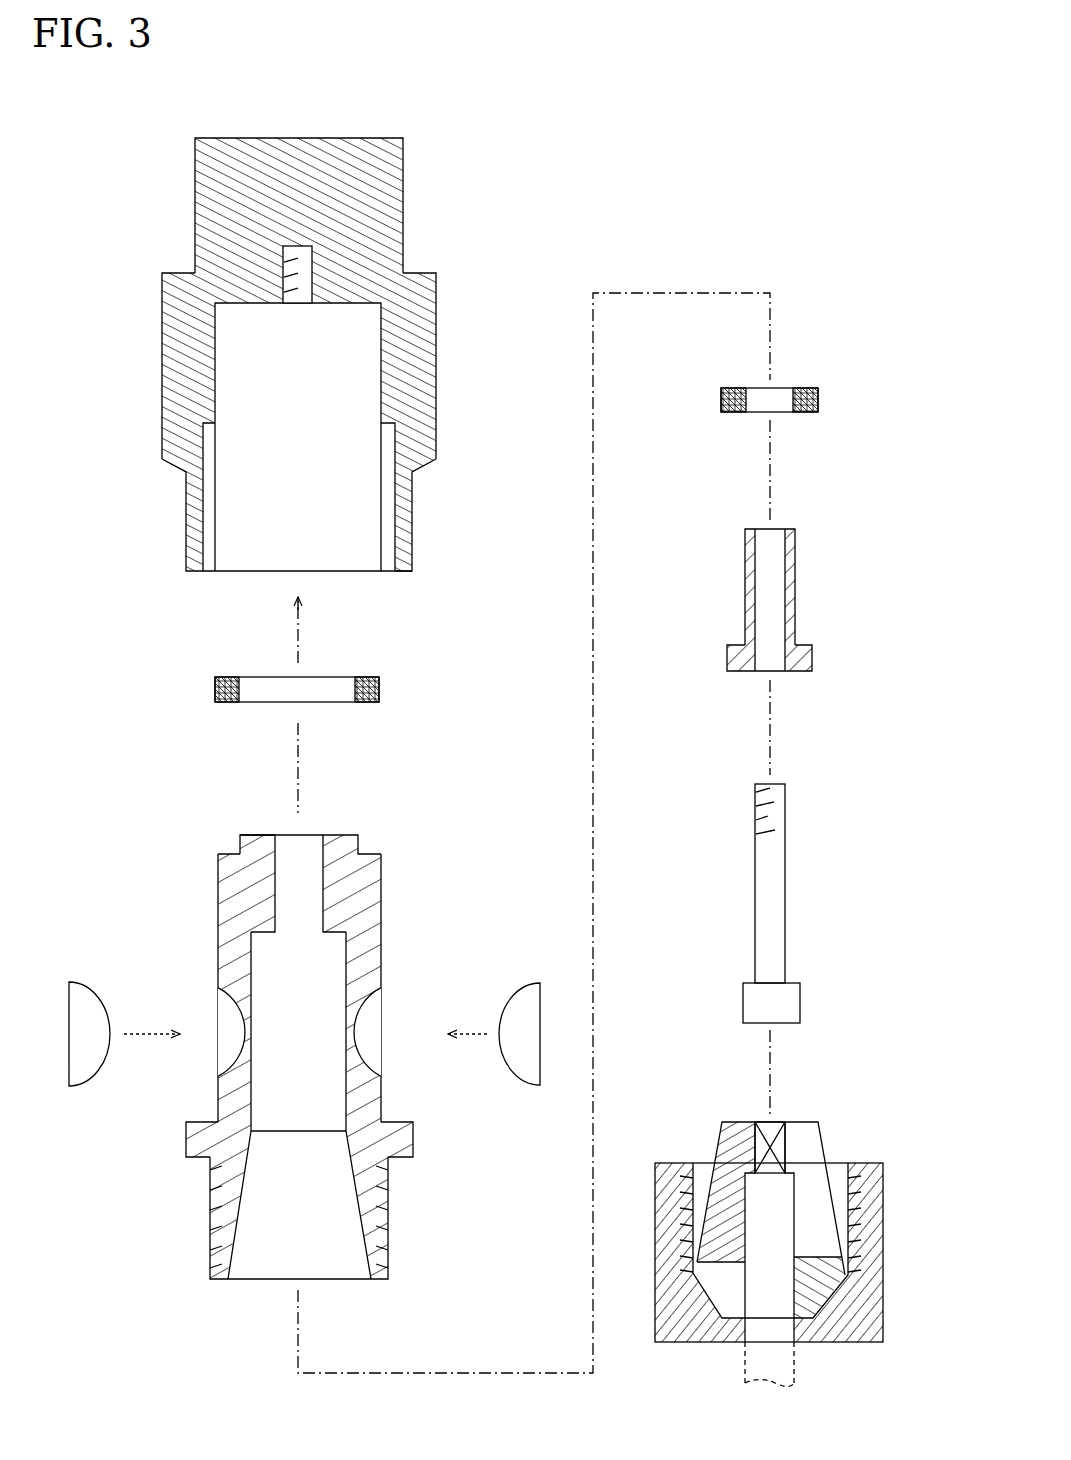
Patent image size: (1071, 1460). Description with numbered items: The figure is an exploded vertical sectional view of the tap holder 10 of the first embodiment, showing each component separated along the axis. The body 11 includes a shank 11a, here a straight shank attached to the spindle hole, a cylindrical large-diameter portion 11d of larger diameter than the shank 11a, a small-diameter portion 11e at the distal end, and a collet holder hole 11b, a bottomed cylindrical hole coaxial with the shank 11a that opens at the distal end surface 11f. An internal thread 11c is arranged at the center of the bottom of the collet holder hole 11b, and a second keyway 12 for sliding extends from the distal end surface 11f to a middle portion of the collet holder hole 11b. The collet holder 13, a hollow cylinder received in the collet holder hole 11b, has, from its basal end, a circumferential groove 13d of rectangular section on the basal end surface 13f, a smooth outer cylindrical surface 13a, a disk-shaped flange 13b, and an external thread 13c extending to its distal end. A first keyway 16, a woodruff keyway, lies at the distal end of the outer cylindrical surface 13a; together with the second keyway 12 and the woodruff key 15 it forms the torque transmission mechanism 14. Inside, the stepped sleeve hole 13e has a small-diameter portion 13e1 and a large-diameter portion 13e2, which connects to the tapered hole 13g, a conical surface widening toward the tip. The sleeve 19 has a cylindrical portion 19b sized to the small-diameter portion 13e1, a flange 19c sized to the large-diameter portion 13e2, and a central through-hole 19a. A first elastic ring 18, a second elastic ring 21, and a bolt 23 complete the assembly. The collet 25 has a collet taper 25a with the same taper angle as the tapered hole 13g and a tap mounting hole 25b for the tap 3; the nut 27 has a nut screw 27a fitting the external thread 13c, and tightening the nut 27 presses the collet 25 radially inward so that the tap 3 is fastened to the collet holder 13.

The tap 3 is at (795, 1370).
The tap holder 10 is at (887, 93).
The body 11 is at (447, 114).
The shank 11a is at (403, 161).
The collet holder hole 11b is at (228, 348).
The internal thread 11c is at (300, 262).
The large-diameter portion 11d is at (437, 352).
The small-diameter portion 11e is at (412, 506).
The distal end surface 11f is at (408, 580).
The second keyway 12 is at (216, 530).
The collet holder 13 is at (388, 814).
The outer cylindrical surface 13a is at (216, 945).
The flange 13b is at (186, 1138).
The external thread 13c is at (210, 1216).
The circumferential groove 13d is at (240, 848).
The sleeve hole 13e is at (298, 1031).
The small-diameter portion 13e1 is at (312, 864).
The large-diameter portion 13e2 is at (335, 1088).
The basal end surface 13f is at (258, 830).
The tapered hole 13g is at (345, 1205).
The torque transmission mechanism 14 is at (393, 543).
The woodruff key 15 is at (76, 980).
The first keyway 16 is at (386, 990).
The first elastic ring 18 is at (380, 690).
The sleeve 19 is at (815, 521).
The through-hole 19a is at (768, 600).
The cylindrical portion 19b is at (796, 570).
The flange 19c is at (812, 655).
The second elastic ring 21 is at (818, 400).
The bolt 23 is at (787, 891).
The collet 25 is at (718, 1150).
The collet taper 25a is at (770, 1147).
The tap mounting hole 25b is at (745, 1342).
The nut 27 is at (841, 1163).
The nut screw 27a is at (770, 1240).